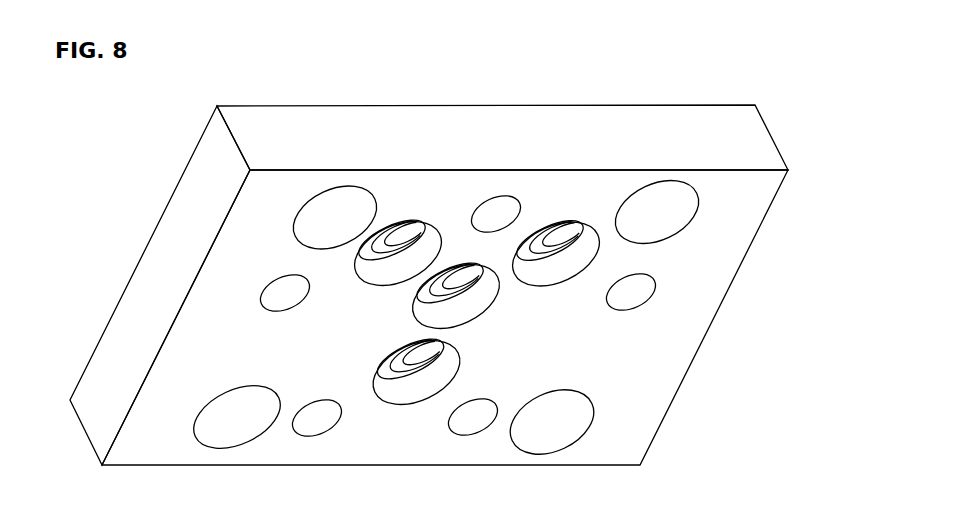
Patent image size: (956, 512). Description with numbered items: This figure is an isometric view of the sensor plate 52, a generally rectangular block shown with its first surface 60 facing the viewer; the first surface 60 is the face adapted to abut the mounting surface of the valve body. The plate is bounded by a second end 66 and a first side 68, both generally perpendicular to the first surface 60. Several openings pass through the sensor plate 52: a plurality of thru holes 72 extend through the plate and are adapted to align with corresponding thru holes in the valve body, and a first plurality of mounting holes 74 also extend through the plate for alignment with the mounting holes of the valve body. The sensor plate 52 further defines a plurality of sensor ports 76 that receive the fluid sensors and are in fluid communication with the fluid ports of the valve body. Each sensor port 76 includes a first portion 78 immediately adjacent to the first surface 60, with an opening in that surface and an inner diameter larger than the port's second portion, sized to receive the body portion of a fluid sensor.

The sensor plate 52 is at (158, 146).
The first surface 60 is at (620, 367).
The second end 66 is at (150, 277).
The first side 68 is at (482, 140).
The thru holes 72 is at (682, 183).
The first plurality of mounting holes 74 is at (653, 288).
The sensor ports 76 is at (400, 316).
The first portion 78 is at (476, 298).